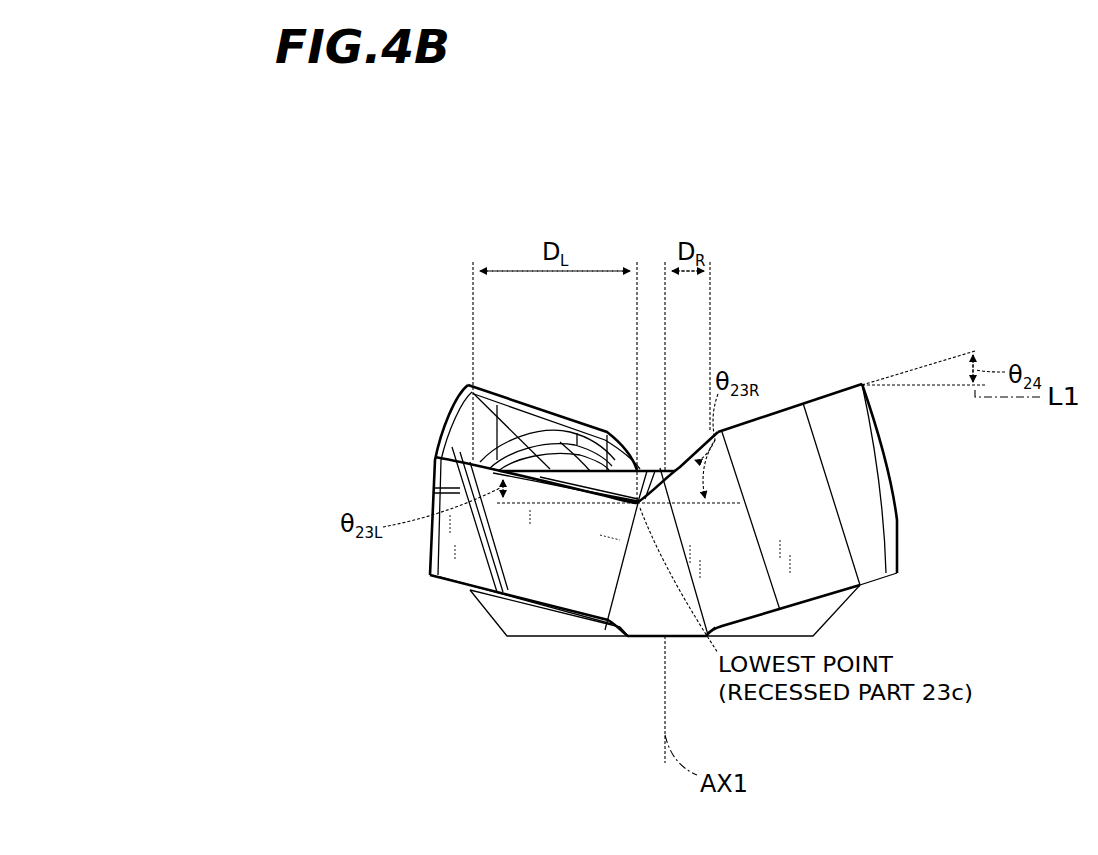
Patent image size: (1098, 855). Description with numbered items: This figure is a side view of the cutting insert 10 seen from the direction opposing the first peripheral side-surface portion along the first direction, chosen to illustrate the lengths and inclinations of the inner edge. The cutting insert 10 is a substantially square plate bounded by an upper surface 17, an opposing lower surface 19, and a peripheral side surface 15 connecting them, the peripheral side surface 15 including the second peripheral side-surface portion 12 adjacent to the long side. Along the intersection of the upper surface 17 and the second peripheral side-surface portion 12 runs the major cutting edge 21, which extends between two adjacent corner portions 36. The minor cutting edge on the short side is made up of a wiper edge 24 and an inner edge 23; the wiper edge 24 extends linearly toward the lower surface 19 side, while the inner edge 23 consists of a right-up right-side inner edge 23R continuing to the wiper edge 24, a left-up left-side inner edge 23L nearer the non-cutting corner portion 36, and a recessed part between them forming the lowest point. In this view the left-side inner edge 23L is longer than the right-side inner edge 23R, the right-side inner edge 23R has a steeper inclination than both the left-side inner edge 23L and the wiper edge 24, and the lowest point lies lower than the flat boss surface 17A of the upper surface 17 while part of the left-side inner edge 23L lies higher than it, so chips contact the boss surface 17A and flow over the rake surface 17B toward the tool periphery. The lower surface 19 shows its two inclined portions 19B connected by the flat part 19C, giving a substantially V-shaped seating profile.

The cutting insert 10 is at (265, 272).
The second peripheral side-surface portion 12 is at (400, 491).
The peripheral side surface 15 is at (897, 421).
The upper surface 17 is at (632, 412).
The boss surface 17A is at (588, 460).
The rake surface 17B is at (497, 400).
The lower surface 19 is at (694, 660).
The inclined portion 19B is at (452, 600).
The flat part 19C is at (643, 650).
The major cutting edge 21 is at (447, 408).
The inner edge 23 is at (723, 128).
The left-side inner edge 23L is at (635, 181).
The right-side inner edge 23R is at (708, 181).
The wiper edge 24 is at (518, 400).
The corner portion 36 is at (436, 458).